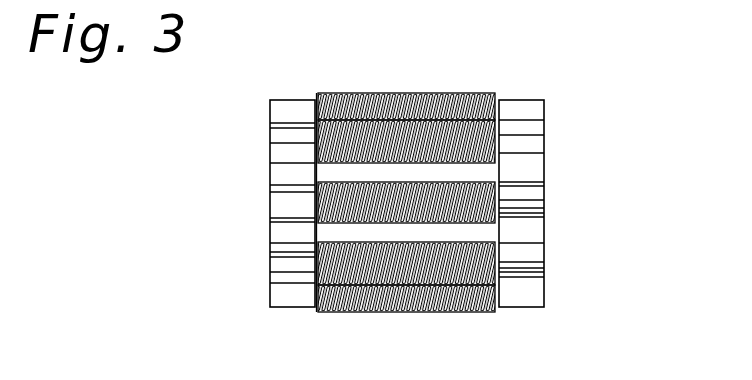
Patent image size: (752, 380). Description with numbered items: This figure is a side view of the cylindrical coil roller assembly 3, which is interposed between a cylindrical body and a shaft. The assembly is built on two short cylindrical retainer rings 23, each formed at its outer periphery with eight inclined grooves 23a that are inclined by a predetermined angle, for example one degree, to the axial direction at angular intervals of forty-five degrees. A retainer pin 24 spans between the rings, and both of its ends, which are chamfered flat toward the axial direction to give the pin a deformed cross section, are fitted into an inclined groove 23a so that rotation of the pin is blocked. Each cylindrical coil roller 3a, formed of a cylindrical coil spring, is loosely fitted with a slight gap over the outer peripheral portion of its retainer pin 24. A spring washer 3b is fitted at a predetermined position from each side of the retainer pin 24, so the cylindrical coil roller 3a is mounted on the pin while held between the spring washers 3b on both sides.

The cylindrical coil roller assembly 3 is at (460, 92).
The cylindrical coil roller 3a is at (433, 93).
The spring washer 3b is at (270, 137).
The retainer ring 23 is at (285, 240).
The inclined groove 23a is at (522, 217).
The retainer pin 24 is at (290, 205).